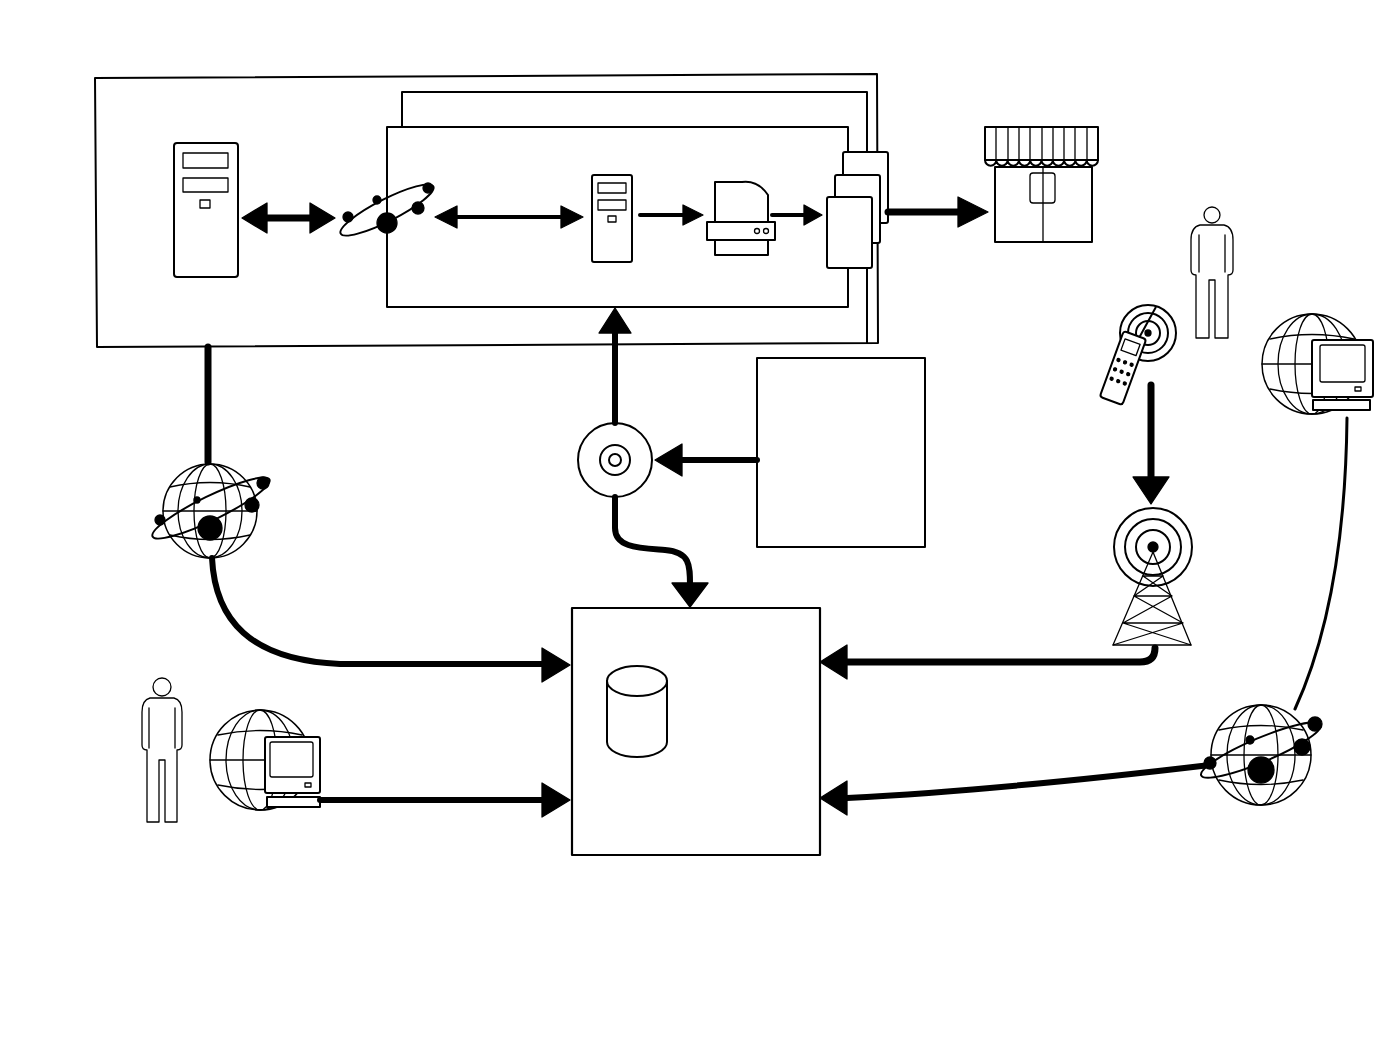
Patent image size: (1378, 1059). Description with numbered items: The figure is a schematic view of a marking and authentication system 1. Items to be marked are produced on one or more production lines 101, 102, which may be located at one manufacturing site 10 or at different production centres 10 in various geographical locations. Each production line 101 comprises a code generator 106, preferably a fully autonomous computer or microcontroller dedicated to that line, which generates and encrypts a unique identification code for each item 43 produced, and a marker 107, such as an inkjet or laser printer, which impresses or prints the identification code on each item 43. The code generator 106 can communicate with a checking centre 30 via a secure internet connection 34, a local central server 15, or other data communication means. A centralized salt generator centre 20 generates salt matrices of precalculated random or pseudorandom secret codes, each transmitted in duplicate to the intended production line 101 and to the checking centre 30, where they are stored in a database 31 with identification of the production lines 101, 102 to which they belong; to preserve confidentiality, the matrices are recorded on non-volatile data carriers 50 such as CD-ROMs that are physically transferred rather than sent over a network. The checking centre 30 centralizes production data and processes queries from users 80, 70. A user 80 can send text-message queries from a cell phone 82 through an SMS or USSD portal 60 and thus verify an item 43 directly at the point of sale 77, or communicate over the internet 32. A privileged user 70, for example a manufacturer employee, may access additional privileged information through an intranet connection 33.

The system 1 is at (1267, 125).
The manufacturing site 10 is at (150, 335).
The local central server 15 is at (218, 258).
The centralized salt generator centre 20 is at (905, 382).
The checking centre 30 is at (580, 833).
The database 31 is at (617, 723).
The internet 32 is at (952, 790).
The intranet connection 33 is at (402, 795).
The secure internet connection 34 is at (365, 638).
The item 43 is at (855, 240).
The non-volatile data carrier 50 is at (587, 465).
The SMS or USSD portal 60 is at (1129, 529).
The privileged user 70 is at (172, 807).
The point of sale 77 is at (1093, 140).
The user 80 is at (1233, 252).
The cell phone 82 is at (1143, 378).
The production line 101 is at (830, 140).
The production line 102 is at (830, 105).
The code generator 106 is at (600, 245).
The marker 107 is at (720, 230).